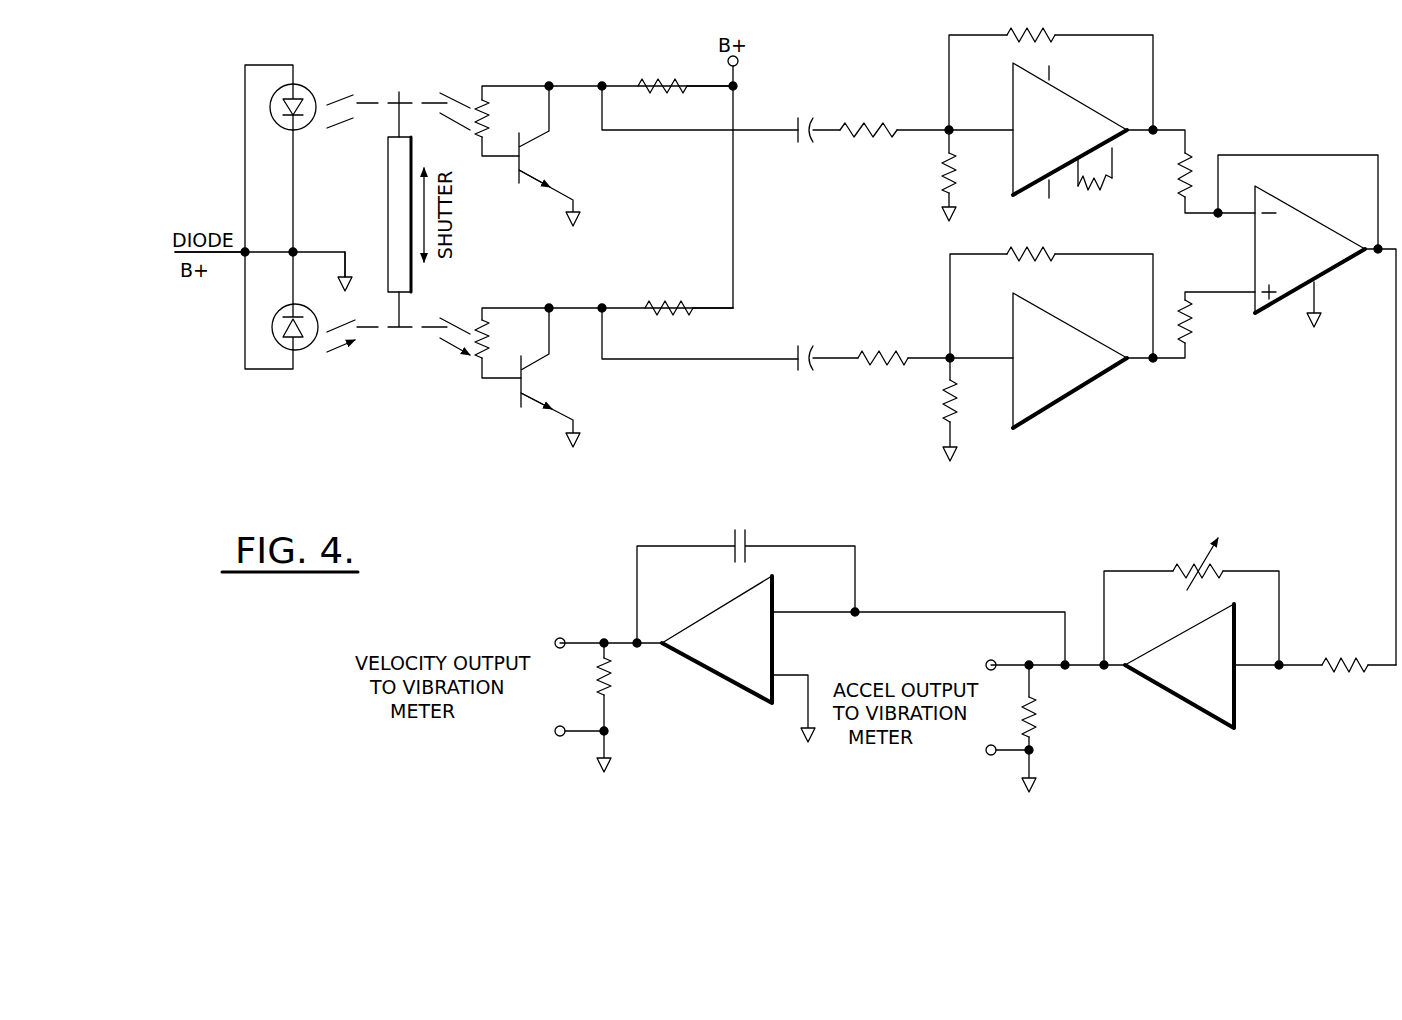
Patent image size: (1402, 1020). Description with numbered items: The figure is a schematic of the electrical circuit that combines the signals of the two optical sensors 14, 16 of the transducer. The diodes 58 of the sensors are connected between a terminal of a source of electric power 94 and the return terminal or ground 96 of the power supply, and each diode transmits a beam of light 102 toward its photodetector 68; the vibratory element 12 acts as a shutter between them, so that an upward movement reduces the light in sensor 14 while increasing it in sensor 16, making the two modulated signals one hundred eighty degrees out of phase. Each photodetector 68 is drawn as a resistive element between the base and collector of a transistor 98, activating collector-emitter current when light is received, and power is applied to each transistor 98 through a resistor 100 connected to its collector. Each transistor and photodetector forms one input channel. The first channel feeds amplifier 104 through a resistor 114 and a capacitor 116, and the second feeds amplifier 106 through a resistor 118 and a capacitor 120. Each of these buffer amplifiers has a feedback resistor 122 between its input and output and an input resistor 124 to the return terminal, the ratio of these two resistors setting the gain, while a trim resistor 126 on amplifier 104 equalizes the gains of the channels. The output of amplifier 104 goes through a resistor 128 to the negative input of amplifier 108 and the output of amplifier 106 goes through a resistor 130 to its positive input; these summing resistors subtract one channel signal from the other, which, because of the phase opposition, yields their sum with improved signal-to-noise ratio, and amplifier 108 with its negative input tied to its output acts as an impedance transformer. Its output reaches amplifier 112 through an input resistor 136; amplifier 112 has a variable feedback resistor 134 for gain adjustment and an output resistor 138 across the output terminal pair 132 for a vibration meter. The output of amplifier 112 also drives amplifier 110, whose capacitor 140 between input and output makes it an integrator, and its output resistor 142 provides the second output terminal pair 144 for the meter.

The vibratory element 12 is at (388, 182).
The sensor 14 is at (356, 80).
The sensor 16 is at (348, 388).
The diode 58 is at (304, 306).
The photodetector 68 is at (470, 90).
The terminal of a source of electric power 94 is at (217, 258).
The return terminal or ground of the power supply 96 is at (352, 285).
The transistor 98 is at (570, 388).
The resistor 100 is at (670, 295).
The beam of light 102 is at (405, 350).
The operational amplifier 104 is at (1065, 93).
The operational amplifier 106 is at (1070, 400).
The operational amplifier 108 is at (1307, 215).
The operational amplifier 110 is at (738, 690).
The operational amplifier 112 is at (1197, 708).
The resistor 114 is at (857, 112).
The capacitor 116 is at (798, 148).
The resistor 118 is at (874, 346).
The capacitor 120 is at (803, 373).
The feedback resistor 122 is at (1052, 282).
The input resistor 124 is at (945, 403).
The trim resistor 126 is at (1088, 190).
The resistor 128 is at (1192, 158).
The resistor 130 is at (1195, 320).
The output terminal pair 132 is at (980, 746).
The variable feedback resistor 134 is at (1185, 562).
The input resistor 136 is at (1343, 682).
The output resistor 138 is at (1040, 727).
The capacitor 140 is at (733, 562).
The output resistor 142 is at (612, 682).
The output terminal pair 144 is at (546, 724).